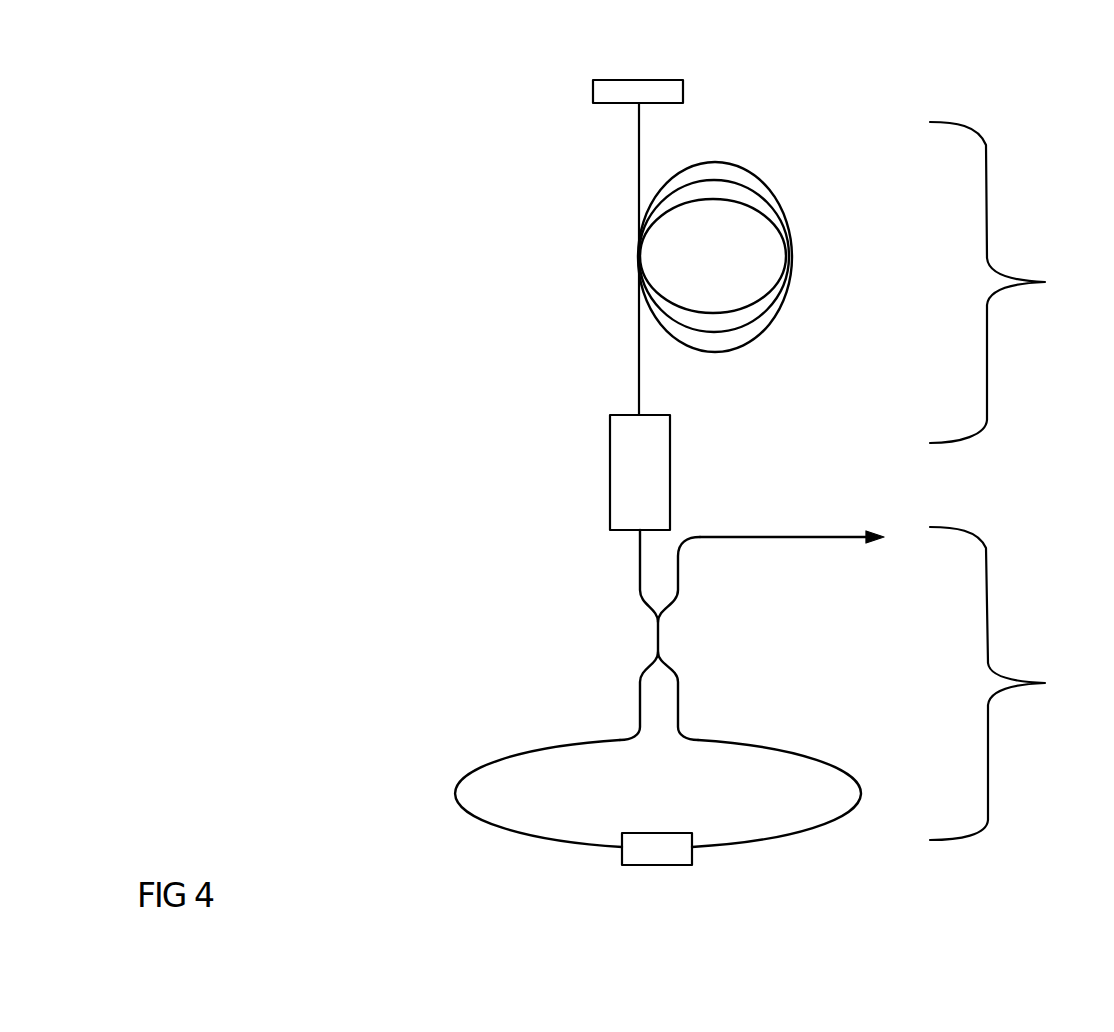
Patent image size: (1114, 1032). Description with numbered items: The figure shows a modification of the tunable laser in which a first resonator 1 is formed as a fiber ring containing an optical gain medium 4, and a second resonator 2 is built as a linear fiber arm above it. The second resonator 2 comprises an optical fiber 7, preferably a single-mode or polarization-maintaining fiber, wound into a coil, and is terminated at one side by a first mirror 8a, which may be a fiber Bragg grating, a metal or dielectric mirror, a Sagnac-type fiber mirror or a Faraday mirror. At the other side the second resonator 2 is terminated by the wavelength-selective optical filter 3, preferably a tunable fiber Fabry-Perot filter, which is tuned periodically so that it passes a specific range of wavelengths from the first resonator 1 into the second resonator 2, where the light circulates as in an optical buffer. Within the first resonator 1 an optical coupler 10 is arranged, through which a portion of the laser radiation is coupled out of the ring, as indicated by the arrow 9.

The first resonator 1 is at (770, 687).
The second resonator 2 is at (1007, 282).
The wavelength-selective optical filter 3 is at (626, 458).
The optical gain medium 4 is at (660, 845).
The optical fiber 7 is at (787, 200).
The first mirror 8a is at (660, 88).
The arrow 9 is at (822, 542).
The optical coupler 10 is at (648, 640).